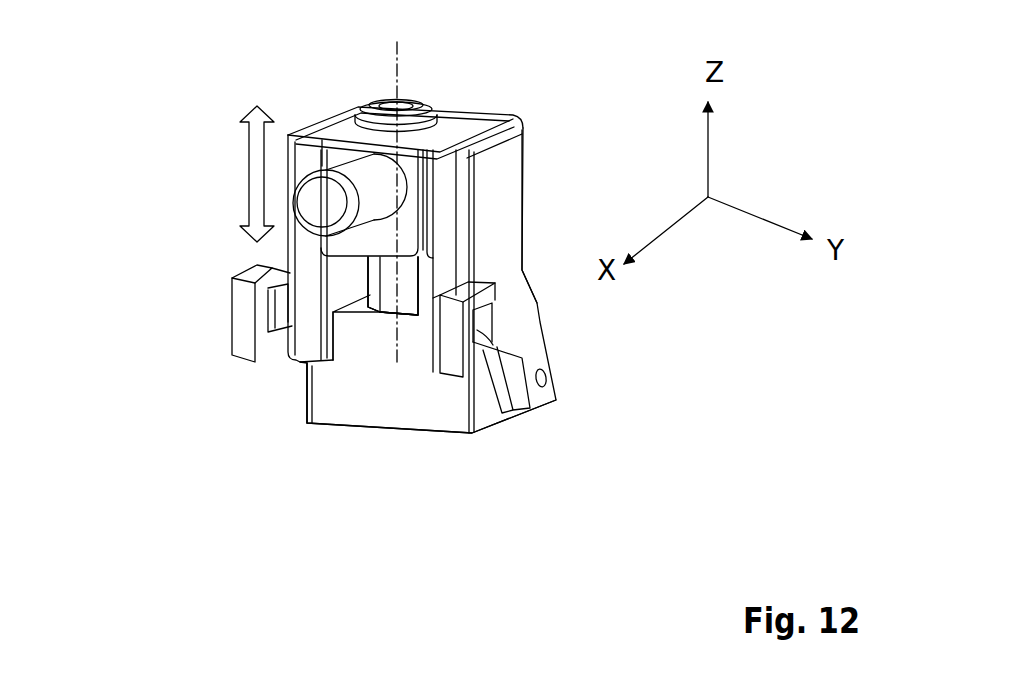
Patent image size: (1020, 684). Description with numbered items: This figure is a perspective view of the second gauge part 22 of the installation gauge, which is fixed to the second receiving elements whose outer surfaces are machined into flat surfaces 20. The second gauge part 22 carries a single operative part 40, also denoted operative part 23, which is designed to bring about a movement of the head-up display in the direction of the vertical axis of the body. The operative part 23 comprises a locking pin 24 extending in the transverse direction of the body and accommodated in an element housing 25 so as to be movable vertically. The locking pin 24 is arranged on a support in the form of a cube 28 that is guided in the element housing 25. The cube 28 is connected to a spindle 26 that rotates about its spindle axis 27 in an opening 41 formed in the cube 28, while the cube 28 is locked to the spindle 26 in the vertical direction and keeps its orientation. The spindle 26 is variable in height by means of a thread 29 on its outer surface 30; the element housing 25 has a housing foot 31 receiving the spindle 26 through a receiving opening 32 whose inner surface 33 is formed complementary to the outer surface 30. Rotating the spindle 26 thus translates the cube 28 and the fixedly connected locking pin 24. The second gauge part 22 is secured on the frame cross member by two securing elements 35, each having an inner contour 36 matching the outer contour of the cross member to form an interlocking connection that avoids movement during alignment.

The flat surface 20 is at (409, 300).
The second gauge part 22 is at (553, 108).
The operative part 23 is at (245, 407).
The locking pin 24 is at (352, 162).
The element housing 25 is at (495, 228).
The spindle 26 is at (388, 285).
The spindle axis 27 is at (400, 57).
The support (cube) 28 is at (321, 140).
The thread 29 is at (393, 286).
The outer surface 30 is at (393, 286).
The housing foot 31 is at (353, 350).
The receiving opening 32 is at (385, 312).
The inner surface 33 is at (393, 313).
The securing element 35 is at (518, 332).
The inner contour 36 is at (481, 346).
The operative part 40 is at (252, 178).
The opening 41 is at (414, 104).